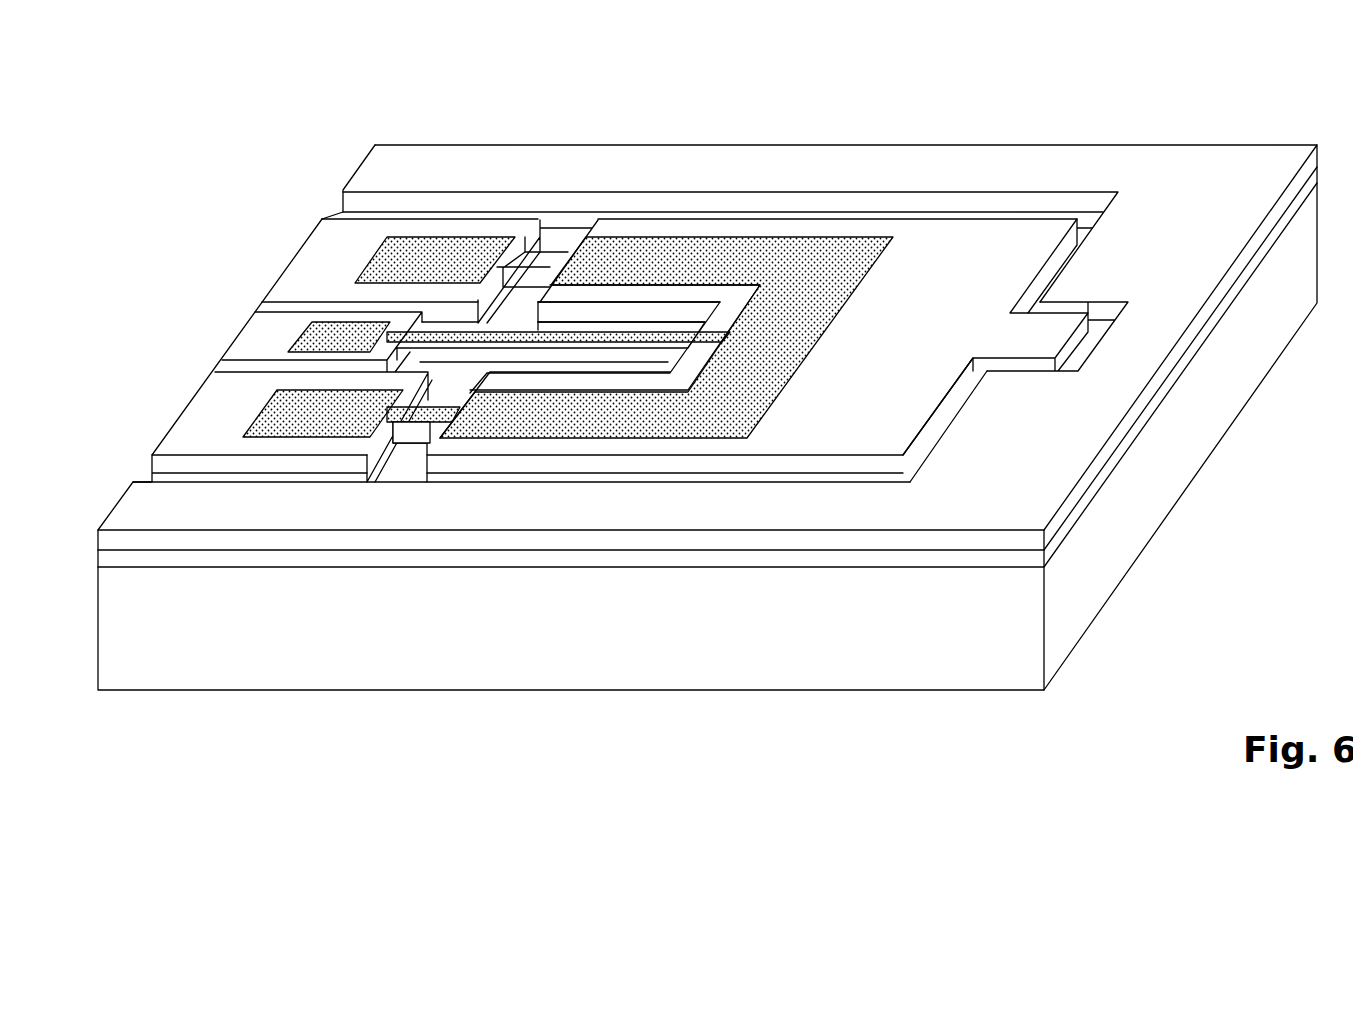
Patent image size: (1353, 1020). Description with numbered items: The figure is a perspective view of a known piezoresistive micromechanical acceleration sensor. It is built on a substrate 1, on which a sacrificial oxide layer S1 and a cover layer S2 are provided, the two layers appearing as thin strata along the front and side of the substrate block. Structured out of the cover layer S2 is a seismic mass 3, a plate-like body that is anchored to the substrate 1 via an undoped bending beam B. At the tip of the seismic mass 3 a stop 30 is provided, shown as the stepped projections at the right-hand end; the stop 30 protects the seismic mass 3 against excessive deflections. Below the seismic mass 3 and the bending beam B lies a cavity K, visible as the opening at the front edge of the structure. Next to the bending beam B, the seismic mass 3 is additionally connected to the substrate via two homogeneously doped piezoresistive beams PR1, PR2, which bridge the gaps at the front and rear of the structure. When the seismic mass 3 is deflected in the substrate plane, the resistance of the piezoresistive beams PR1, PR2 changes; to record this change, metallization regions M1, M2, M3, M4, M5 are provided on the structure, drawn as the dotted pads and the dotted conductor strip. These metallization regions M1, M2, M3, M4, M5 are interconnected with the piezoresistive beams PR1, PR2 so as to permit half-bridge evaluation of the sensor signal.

The substrate 1 is at (457, 672).
The sacrificial oxide layer S1 is at (150, 555).
The cover layer S2 is at (130, 500).
The seismic mass 3 is at (960, 232).
The stop 30 is at (1075, 307).
The metallization region M1 is at (445, 255).
The metallization region M2 is at (838, 255).
The metallization region M3 is at (270, 410).
The metallization region M4 is at (720, 336).
The metallization region M5 is at (318, 337).
The bending beam B is at (677, 330).
The piezoresistive beam PR1 is at (447, 413).
The piezoresistive beam PR2 is at (548, 262).
The cavity K is at (403, 470).